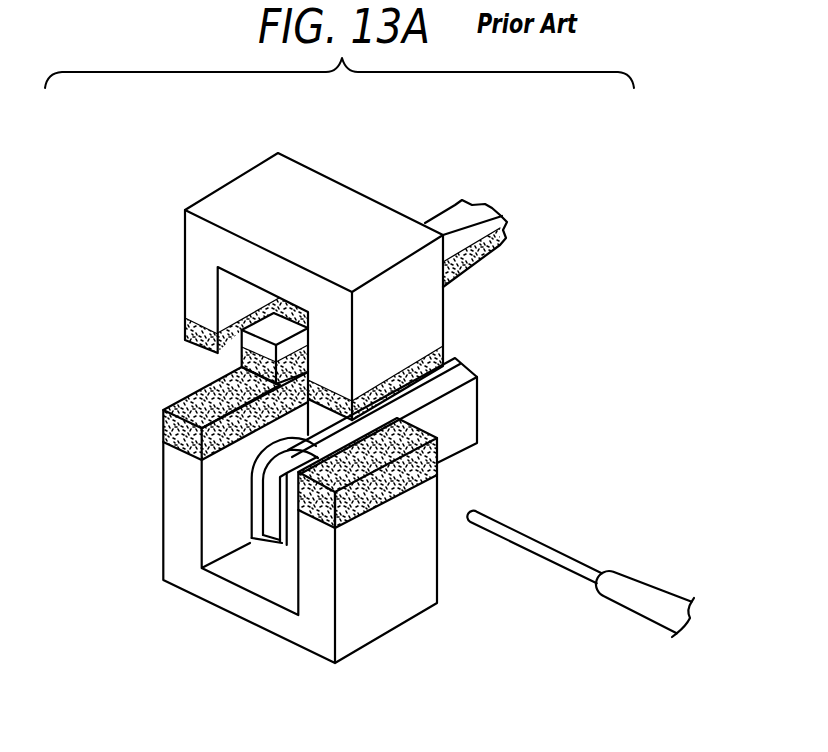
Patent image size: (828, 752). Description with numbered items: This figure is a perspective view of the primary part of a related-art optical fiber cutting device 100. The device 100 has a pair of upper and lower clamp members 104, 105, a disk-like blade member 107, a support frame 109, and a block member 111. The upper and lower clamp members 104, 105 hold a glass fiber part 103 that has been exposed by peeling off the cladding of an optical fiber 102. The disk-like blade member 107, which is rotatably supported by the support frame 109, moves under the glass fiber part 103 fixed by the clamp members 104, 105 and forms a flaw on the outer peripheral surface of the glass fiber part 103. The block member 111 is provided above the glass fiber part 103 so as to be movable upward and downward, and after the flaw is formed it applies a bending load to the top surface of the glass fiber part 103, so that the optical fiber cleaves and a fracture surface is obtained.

The optical fiber cutting device 100 is at (386, 194).
The optical fiber 102 is at (647, 577).
The glass fiber part 103 is at (547, 545).
The upper clamp member 104 is at (185, 272).
The lower clamp member 105 is at (163, 518).
The disk-like blade member 107 is at (267, 515).
The support frame 109 is at (448, 427).
The block member 111 is at (288, 322).